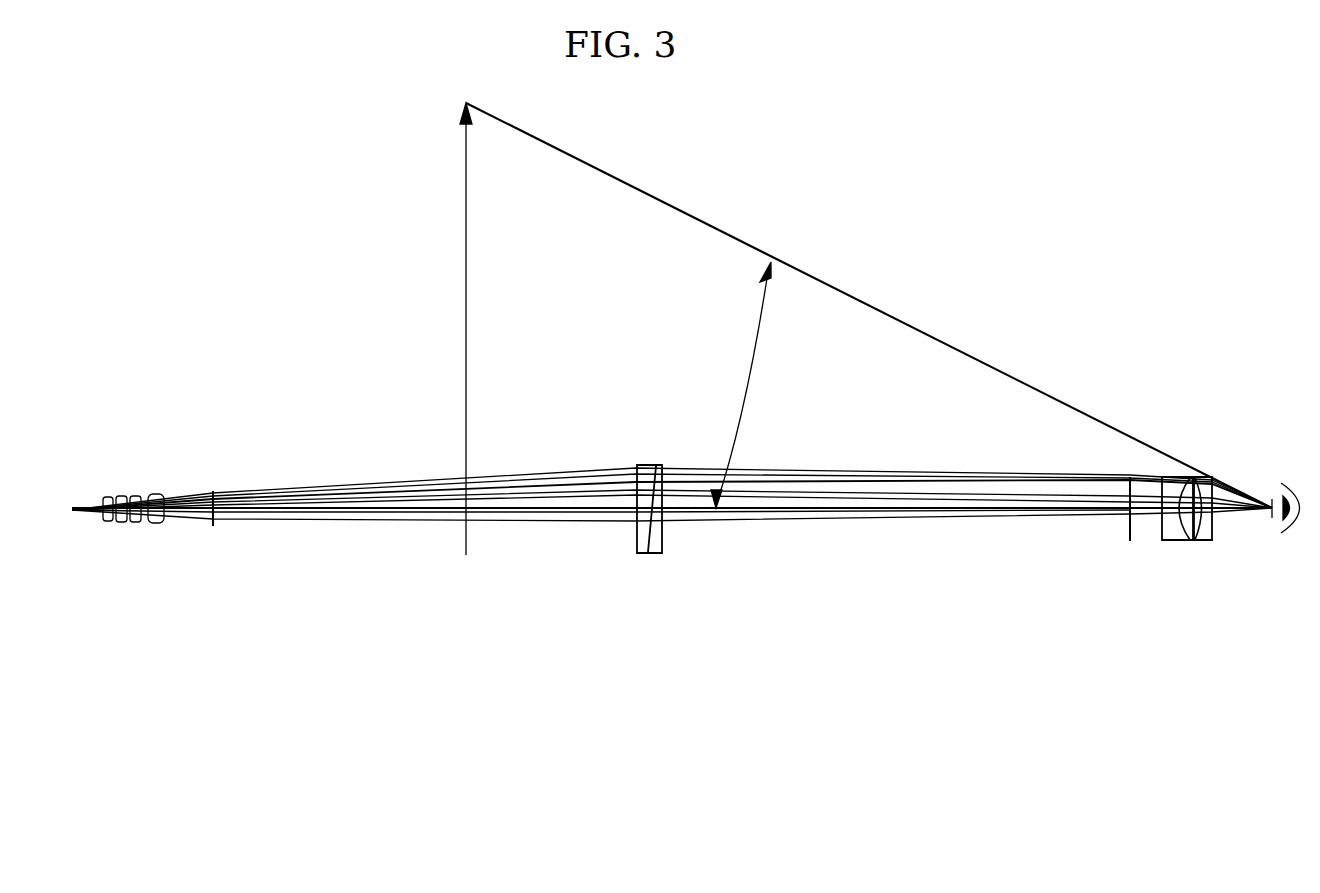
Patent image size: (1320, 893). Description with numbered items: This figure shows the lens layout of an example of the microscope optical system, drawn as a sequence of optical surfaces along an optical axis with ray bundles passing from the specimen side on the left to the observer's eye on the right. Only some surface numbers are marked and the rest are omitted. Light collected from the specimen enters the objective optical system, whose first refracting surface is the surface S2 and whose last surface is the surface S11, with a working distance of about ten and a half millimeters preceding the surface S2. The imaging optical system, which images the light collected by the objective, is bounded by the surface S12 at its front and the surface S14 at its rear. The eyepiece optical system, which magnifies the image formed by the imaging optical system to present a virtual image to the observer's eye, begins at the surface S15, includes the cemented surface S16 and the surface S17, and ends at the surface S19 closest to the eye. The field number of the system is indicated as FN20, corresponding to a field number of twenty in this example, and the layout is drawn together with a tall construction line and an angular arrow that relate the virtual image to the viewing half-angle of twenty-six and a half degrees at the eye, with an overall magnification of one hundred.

The surface 2 S2 is at (106, 497).
The surface 11 S11 is at (161, 497).
The surface 12 S12 is at (637, 470).
The surface 14 S14 is at (662, 470).
The surface 15 S15 is at (1162, 528).
The surface 16 S16 is at (1172, 541).
The surface 17 S17 is at (1190, 541).
The surface 19 S19 is at (1214, 492).
The field number FN20 is at (1126, 466).